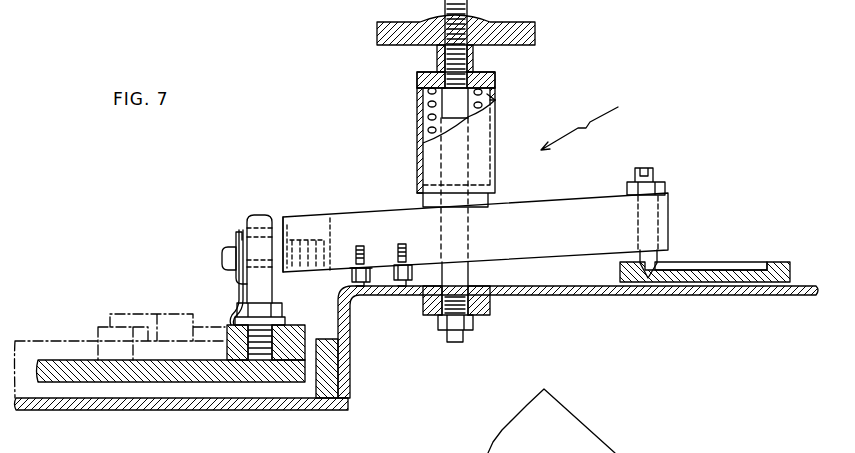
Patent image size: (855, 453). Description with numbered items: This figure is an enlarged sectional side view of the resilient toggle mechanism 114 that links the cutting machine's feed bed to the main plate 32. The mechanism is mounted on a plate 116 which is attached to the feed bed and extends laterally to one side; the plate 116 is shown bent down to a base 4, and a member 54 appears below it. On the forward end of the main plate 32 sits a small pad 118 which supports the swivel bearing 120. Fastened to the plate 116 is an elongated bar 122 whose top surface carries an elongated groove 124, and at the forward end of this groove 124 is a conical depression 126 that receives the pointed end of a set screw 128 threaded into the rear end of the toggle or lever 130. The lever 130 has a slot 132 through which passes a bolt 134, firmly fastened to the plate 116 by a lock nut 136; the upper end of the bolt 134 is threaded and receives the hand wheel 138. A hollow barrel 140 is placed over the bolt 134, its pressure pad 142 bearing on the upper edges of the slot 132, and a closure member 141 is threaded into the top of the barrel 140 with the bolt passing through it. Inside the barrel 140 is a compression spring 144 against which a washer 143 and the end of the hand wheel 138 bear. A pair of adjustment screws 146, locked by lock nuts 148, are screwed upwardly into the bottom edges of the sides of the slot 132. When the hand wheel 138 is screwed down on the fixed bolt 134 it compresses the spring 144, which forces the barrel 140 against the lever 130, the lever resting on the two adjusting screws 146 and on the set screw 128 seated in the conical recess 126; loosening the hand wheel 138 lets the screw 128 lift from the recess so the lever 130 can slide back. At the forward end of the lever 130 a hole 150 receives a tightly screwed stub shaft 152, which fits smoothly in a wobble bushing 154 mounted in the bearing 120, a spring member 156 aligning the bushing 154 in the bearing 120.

The base plate 4 is at (115, 410).
The main plate 32 is at (88, 357).
The member 54 is at (560, 451).
The resilient toggle mechanism 114 is at (596, 122).
The plate 116 is at (530, 287).
The pad 118 is at (297, 326).
The swivel bearing 120 is at (258, 215).
The elongated pad or bar 122 is at (776, 262).
The elongated groove 124 is at (720, 262).
The conical depression 126 is at (661, 266).
The set screw 128 is at (655, 172).
The toggle or lever 130 is at (547, 203).
The slot 132 is at (331, 228).
The bolt 134 is at (456, 273).
The lock nut 136 is at (472, 325).
The hand wheel 138 is at (536, 34).
The hollow cylinder or barrel 140 is at (497, 81).
The closure member 141 is at (482, 78).
The pressure pad 142 is at (492, 200).
The washer 143 is at (497, 100).
The compression spring 144 is at (426, 120).
The adjustment screws 146 is at (401, 245).
The lock nuts 148 is at (351, 278).
The hole 150 is at (291, 227).
The stub shaft 152 is at (222, 258).
The wobble bushing 154 is at (243, 240).
The spring member 156 is at (236, 300).